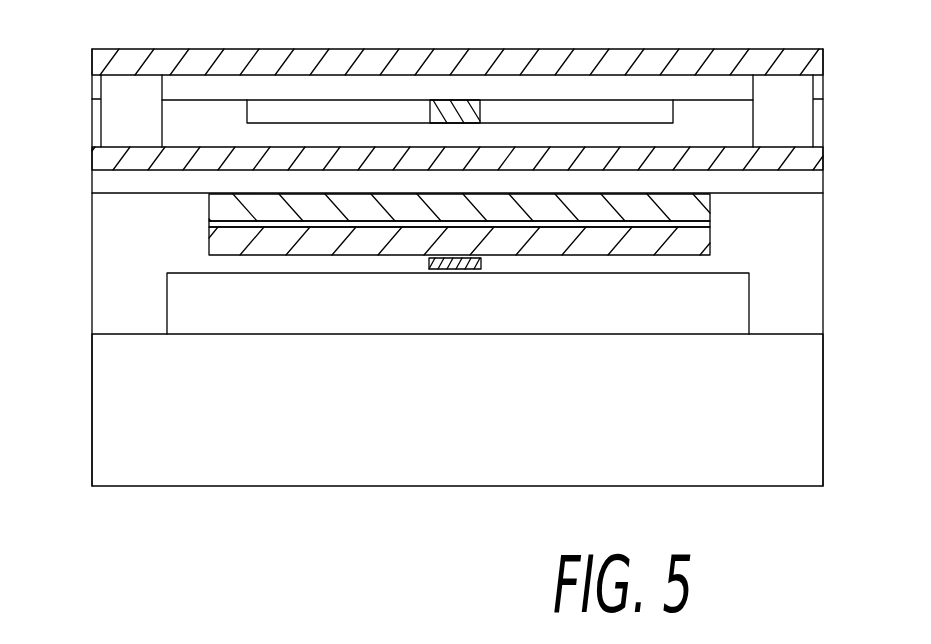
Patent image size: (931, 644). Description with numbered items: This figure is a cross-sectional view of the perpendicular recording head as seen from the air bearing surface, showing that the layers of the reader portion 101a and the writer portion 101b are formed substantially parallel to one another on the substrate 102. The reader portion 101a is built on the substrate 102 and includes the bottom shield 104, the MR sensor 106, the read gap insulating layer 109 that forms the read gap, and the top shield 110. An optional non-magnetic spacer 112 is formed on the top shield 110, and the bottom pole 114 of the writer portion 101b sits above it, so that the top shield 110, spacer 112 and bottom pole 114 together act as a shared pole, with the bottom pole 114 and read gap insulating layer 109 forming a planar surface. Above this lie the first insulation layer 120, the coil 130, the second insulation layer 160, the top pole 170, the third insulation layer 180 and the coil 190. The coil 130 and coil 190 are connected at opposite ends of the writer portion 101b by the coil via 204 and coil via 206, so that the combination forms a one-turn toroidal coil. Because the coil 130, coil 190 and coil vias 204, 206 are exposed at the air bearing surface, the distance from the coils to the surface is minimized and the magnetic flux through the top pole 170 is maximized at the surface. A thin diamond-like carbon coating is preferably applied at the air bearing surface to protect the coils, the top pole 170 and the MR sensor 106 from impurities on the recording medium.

The coil 190 is at (84, 63).
The coil via 204 is at (152, 126).
The coil via 206 is at (802, 120).
The second insulation layer 160 is at (727, 142).
The third insulation layer 180 is at (642, 112).
The top pole 170 is at (418, 104).
The coil 130 is at (84, 156).
The first insulation layer 120 is at (100, 184).
The bottom pole 114 is at (220, 212).
The non-magnetic spacer 112 is at (220, 223).
The top shield 110 is at (220, 245).
The read gap insulating layer 109 is at (784, 241).
The MR sensor 106 is at (492, 265).
The bottom shield 104 is at (742, 307).
The substrate 102 is at (824, 415).
The reader portion 101a is at (845, 191).
The writer portion 101b is at (829, 49).